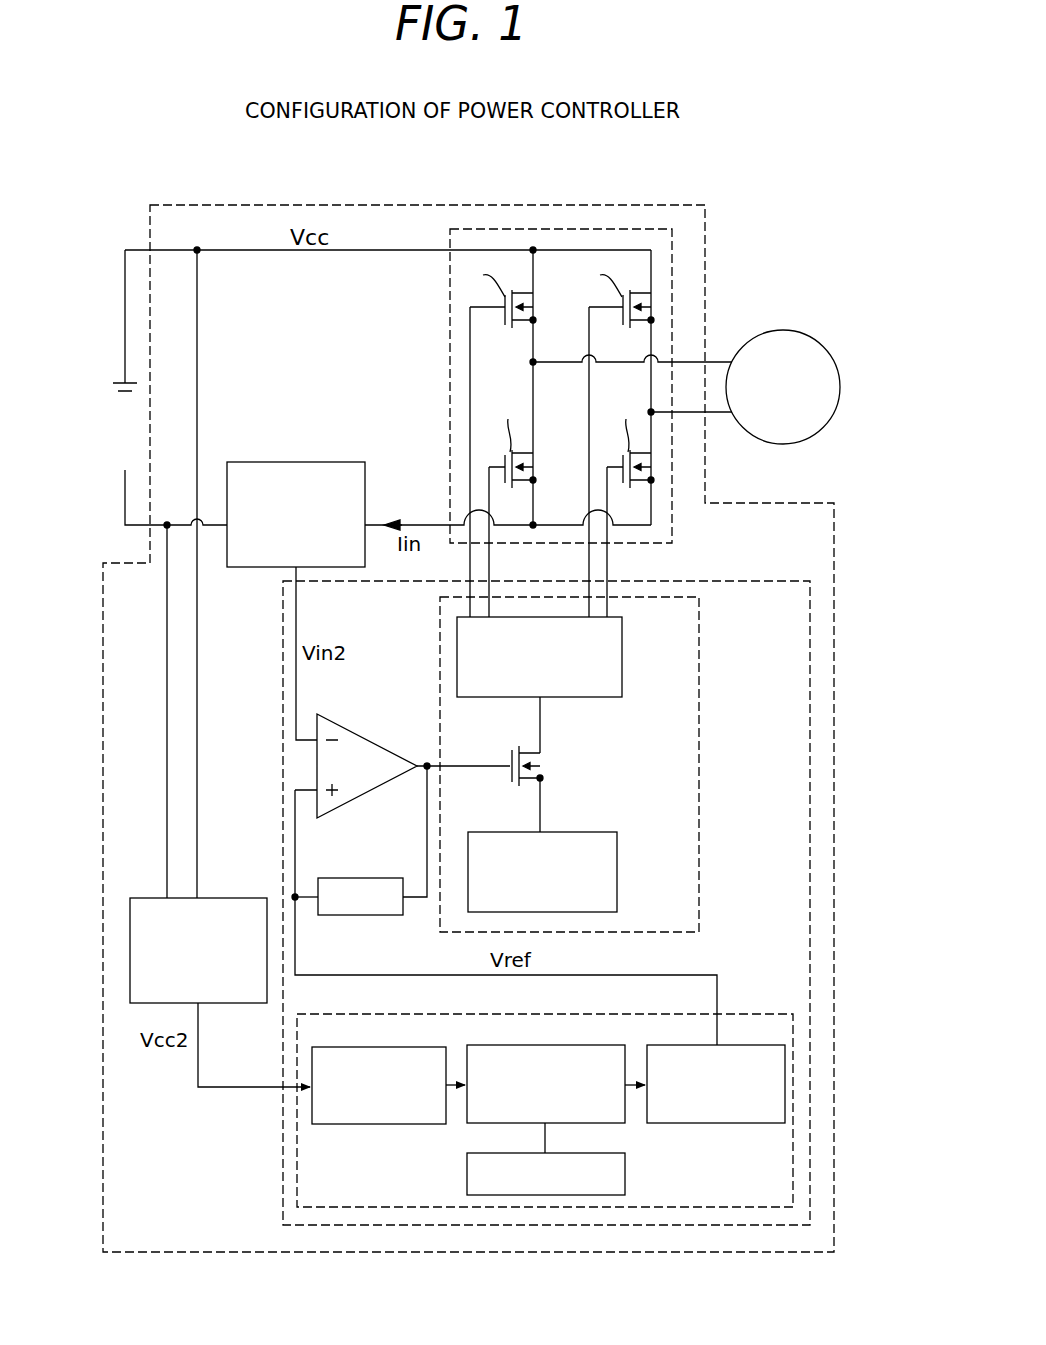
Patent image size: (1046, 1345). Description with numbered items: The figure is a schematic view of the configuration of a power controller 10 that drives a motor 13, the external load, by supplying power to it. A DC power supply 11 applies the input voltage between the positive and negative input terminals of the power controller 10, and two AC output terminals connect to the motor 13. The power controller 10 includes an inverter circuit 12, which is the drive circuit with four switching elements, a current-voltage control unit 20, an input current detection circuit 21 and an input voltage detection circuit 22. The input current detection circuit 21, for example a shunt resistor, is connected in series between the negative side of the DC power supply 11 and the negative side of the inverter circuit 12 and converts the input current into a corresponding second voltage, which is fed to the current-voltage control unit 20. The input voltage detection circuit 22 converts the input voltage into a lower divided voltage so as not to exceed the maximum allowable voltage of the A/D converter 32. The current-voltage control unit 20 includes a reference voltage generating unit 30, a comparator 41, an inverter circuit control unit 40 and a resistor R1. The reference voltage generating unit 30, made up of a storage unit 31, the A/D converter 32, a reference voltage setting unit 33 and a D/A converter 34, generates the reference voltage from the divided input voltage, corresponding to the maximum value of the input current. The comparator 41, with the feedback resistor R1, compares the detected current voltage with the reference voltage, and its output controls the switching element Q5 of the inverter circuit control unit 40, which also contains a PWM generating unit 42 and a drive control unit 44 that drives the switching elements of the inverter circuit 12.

The power controller 10 is at (687, 203).
The DC power supply 11 is at (120, 378).
The inverter circuit 12 is at (672, 257).
The motor 13 is at (790, 331).
The current-voltage control unit 20 is at (720, 580).
The input current detection circuit 21 is at (313, 462).
The input voltage detection circuit 22 is at (215, 898).
The reference voltage generating unit 30 is at (545, 1014).
The storage unit 31 is at (578, 1153).
The A/D converter 32 is at (380, 1047).
The reference voltage setting unit 33 is at (575, 1045).
The D/A converter 34 is at (735, 1045).
The inverter circuit control unit 40 is at (699, 725).
The comparator 41 is at (382, 746).
The PWM generating unit 42 is at (617, 868).
The drive control unit 44 is at (622, 655).
The resistor R1 is at (345, 878).
The switching element Q5 is at (510, 752).